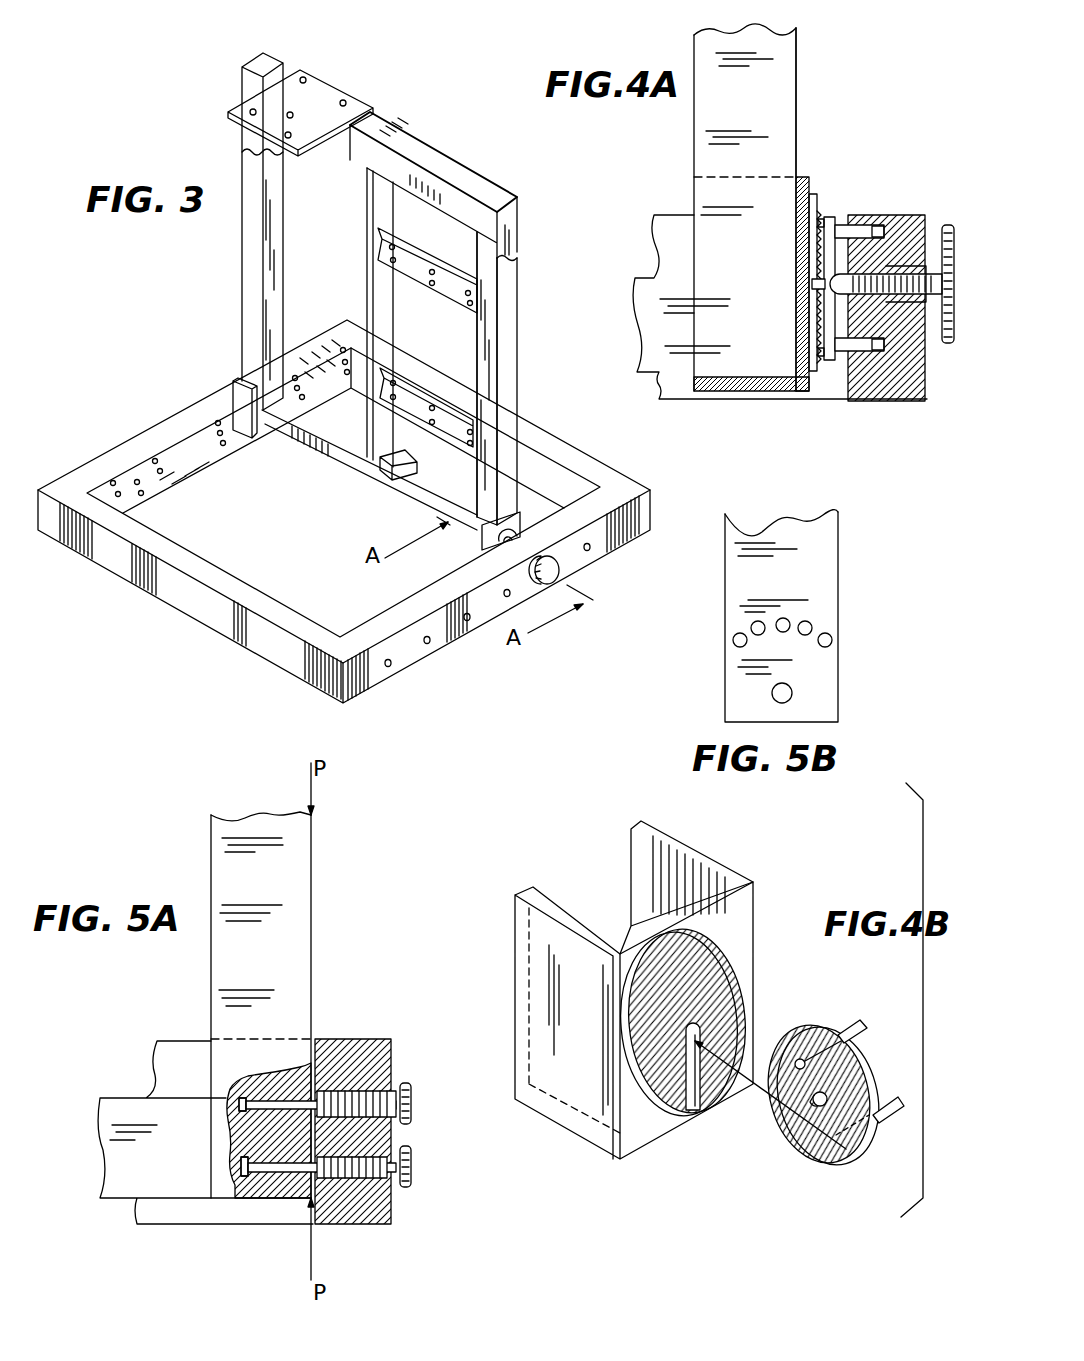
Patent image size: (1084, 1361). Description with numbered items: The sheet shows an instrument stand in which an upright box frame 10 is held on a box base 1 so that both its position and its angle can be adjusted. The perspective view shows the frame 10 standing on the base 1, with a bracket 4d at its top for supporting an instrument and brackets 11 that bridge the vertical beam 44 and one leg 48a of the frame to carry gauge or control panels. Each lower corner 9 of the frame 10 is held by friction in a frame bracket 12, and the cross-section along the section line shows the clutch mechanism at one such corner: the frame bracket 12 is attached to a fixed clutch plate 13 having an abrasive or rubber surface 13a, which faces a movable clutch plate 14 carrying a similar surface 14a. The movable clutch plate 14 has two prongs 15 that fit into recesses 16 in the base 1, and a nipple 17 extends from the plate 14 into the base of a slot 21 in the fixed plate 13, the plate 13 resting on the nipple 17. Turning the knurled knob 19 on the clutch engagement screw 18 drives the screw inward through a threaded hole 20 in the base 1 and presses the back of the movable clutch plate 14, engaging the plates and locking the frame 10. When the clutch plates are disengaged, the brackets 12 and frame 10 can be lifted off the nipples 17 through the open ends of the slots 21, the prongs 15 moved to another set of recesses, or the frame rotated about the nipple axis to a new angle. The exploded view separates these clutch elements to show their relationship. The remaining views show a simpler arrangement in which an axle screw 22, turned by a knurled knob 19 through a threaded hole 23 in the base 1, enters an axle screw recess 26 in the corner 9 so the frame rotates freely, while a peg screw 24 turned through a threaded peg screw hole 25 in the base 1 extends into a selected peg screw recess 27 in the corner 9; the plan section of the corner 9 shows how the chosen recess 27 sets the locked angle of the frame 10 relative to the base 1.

In FIG. 3, the box base 1 is at (290, 659).
In FIG. 4A, the box base 1 is at (901, 399).
In FIG. 3, the bracket 4d is at (328, 97).
In FIG. 3, the lower corner 9 is at (270, 417).
In FIG. 4A, the lower corner 9 is at (781, 341).
In FIG. 5B, the lower corner 9 is at (733, 697).
In FIG. 5A, the lower corner 9 is at (235, 1135).
In FIG. 3, the upright box frame 10 is at (520, 273).
In FIG. 4A, the upright box frame 10 is at (799, 65).
In FIG. 5A, the upright box frame 10 is at (313, 908).
In FIG. 3, the bracket 11 is at (426, 280).
In FIG. 3, the frame bracket 12 is at (243, 395).
In FIG. 4A, the frame bracket 12 is at (801, 387).
In FIG. 4B, the frame bracket 12 is at (751, 925).
In FIG. 3, the fixed clutch plate 13 is at (522, 524).
In FIG. 4A, the fixed clutch plate 13 is at (814, 192).
In FIG. 4B, the fixed clutch plate 13 is at (698, 931).
In FIG. 4A, the abrasive or rubber surface 13a is at (819, 374).
In FIG. 4B, the abrasive or rubber surface 13a is at (723, 987).
In FIG. 3, the movable clutch plate 14 is at (483, 550).
In FIG. 4A, the movable clutch plate 14 is at (828, 214).
In FIG. 4B, the movable clutch plate 14 is at (861, 1085).
In FIG. 4A, the abrasive or rubber surface 14a is at (833, 220).
In FIG. 4B, the abrasive or rubber surface 14a is at (791, 1046).
In FIG. 4A, the prong 15 is at (858, 227).
In FIG. 4B, the prong 15 is at (848, 1026).
In FIG. 3, the recess 16 is at (218, 427).
In FIG. 4A, the recess 16 is at (881, 231).
In FIG. 4A, the nipple 17 is at (814, 286).
In FIG. 4B, the nipple 17 is at (820, 1108).
In FIG. 4A, the clutch engagement screw 18 is at (932, 272).
In FIG. 3, the knurled knob 19 is at (560, 566).
In FIG. 4A, the knurled knob 19 is at (945, 346).
In FIG. 5A, the knurled knob 19 is at (407, 1085).
In FIG. 3, the threaded hole 20 is at (158, 466).
In FIG. 4A, the threaded hole 20 is at (898, 294).
In FIG. 4B, the slot 21 is at (691, 1099).
In FIG. 5A, the axle screw 22 is at (393, 1204).
In FIG. 5A, the threaded hole 23 is at (372, 1150).
In FIG. 5A, the peg screw 24 is at (333, 1093).
In FIG. 5A, the threaded peg screw hole 25 is at (361, 1091).
In FIG. 5B, the axle screw recess 26 is at (792, 693).
In FIG. 5A, the axle screw recess 26 is at (257, 1176).
In FIG. 5B, the peg screw recess 27 is at (808, 622).
In FIG. 5A, the peg screw recess 27 is at (239, 1104).
In FIG. 3, the vertical beam 44 is at (386, 214).
In FIG. 3, the leg 48a is at (487, 312).
In FIG. 4A, the leg 48a is at (797, 107).